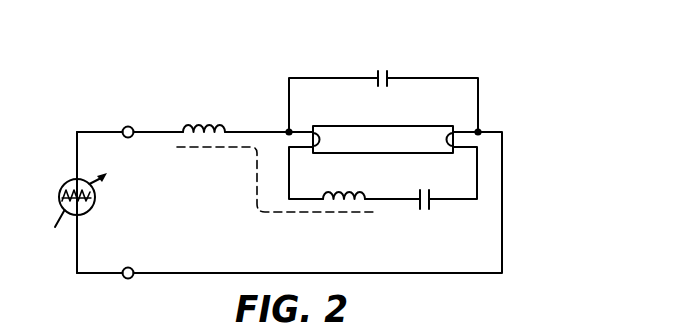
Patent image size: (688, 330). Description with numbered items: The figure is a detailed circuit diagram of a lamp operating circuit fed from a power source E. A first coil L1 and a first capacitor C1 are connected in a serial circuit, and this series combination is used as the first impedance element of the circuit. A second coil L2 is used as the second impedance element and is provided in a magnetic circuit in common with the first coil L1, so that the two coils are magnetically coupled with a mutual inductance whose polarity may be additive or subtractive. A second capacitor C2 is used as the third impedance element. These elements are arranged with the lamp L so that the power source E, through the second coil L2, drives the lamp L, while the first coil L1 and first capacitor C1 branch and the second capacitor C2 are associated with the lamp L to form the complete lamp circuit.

The power source E is at (70, 200).
The second coil L2 is at (204, 116).
The lamp L is at (383, 127).
The second capacitor C2 is at (389, 64).
The first coil L1 is at (344, 216).
The first capacitor C1 is at (428, 212).